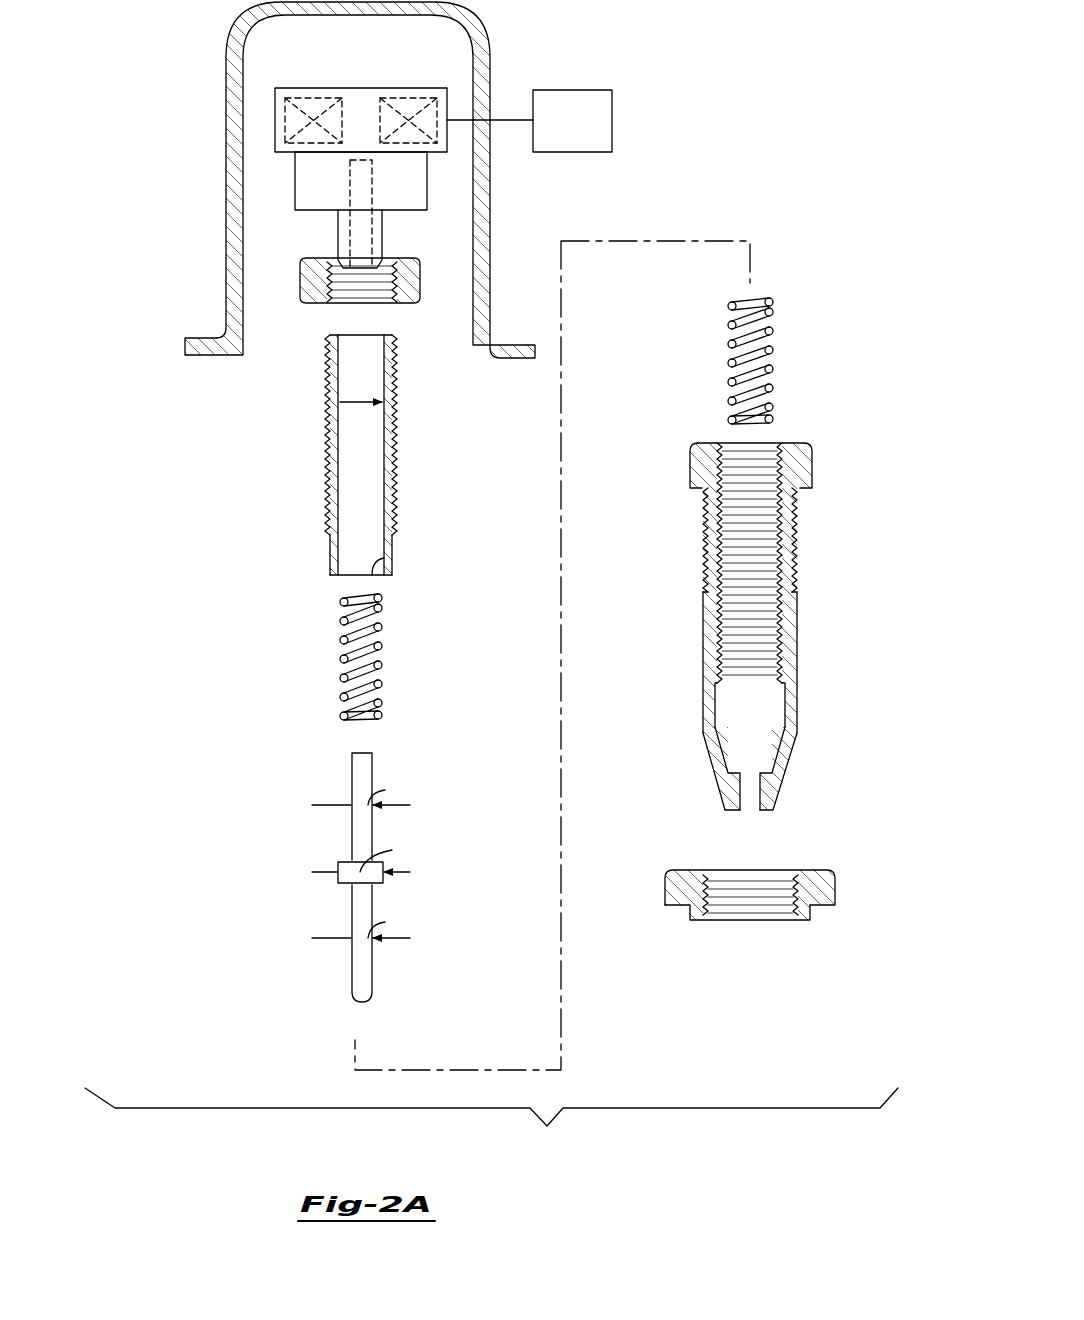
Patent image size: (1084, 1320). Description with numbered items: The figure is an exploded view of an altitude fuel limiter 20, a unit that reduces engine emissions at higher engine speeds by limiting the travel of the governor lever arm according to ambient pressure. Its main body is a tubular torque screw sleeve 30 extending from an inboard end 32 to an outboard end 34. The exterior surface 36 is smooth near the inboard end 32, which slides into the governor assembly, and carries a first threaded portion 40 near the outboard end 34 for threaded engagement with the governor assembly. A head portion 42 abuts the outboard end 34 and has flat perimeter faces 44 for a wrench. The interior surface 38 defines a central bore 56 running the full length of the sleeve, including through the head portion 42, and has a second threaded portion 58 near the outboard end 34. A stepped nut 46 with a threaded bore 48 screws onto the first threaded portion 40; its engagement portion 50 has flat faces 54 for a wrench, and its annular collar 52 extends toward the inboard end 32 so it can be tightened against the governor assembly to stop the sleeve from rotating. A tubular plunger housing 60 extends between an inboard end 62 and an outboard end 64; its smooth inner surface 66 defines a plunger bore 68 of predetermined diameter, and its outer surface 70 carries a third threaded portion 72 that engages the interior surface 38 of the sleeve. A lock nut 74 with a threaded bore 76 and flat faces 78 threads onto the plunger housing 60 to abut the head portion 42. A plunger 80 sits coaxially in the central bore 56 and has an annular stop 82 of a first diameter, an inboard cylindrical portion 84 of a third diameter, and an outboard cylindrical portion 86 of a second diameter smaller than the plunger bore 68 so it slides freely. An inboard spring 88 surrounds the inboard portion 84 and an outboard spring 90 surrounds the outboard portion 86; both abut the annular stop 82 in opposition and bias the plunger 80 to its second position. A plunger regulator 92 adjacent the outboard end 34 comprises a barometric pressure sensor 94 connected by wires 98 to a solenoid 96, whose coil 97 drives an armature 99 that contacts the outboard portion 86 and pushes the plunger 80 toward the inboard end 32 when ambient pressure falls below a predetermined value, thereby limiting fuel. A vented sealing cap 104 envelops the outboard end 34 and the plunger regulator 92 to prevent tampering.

The altitude fuel limiter 20 is at (491, 1124).
The torque screw sleeve 30 is at (728, 613).
The inboard end 32 is at (721, 799).
The outboard end 34 is at (773, 439).
The exterior surface 36 is at (703, 636).
The interior surface 38 is at (783, 722).
The first threaded portion 40 is at (703, 523).
The head portion 42 is at (697, 463).
The flat perimeter faces 44 is at (690, 471).
The stepped nut 46 is at (756, 901).
The threaded bore 48 is at (755, 886).
The engagement portion 50 is at (658, 870).
The annular collar 52 is at (696, 912).
The flat faces 54 is at (836, 890).
The central bore 56 is at (740, 721).
The second threaded portion 58 is at (717, 556).
The plunger housing 60 is at (347, 487).
The inboard end 62 is at (324, 577).
The outboard end 64 is at (332, 487).
The inner surface 66 is at (374, 566).
The plunger bore 68 is at (348, 491).
The outer surface 70 is at (330, 551).
The third threaded portion 72 is at (329, 428).
The lock nut 74 is at (352, 281).
The threaded bore 76 is at (360, 285).
The flat faces 78 is at (420, 278).
The plunger 80 is at (360, 877).
The annular stop 82 is at (303, 855).
The inboard cylindrical portion 84 is at (303, 1000).
The outboard cylindrical portion 86 is at (303, 753).
The inboard spring 88 is at (708, 302).
The outboard spring 90 is at (316, 597).
The plunger regulator 92 is at (365, 151).
The barometric pressure sensor 94 is at (561, 134).
The solenoid 96 is at (420, 182).
The coil 97 is at (308, 100).
The wires 98 is at (497, 120).
The armature 99 is at (361, 178).
The sealing cap 104 is at (226, 55).